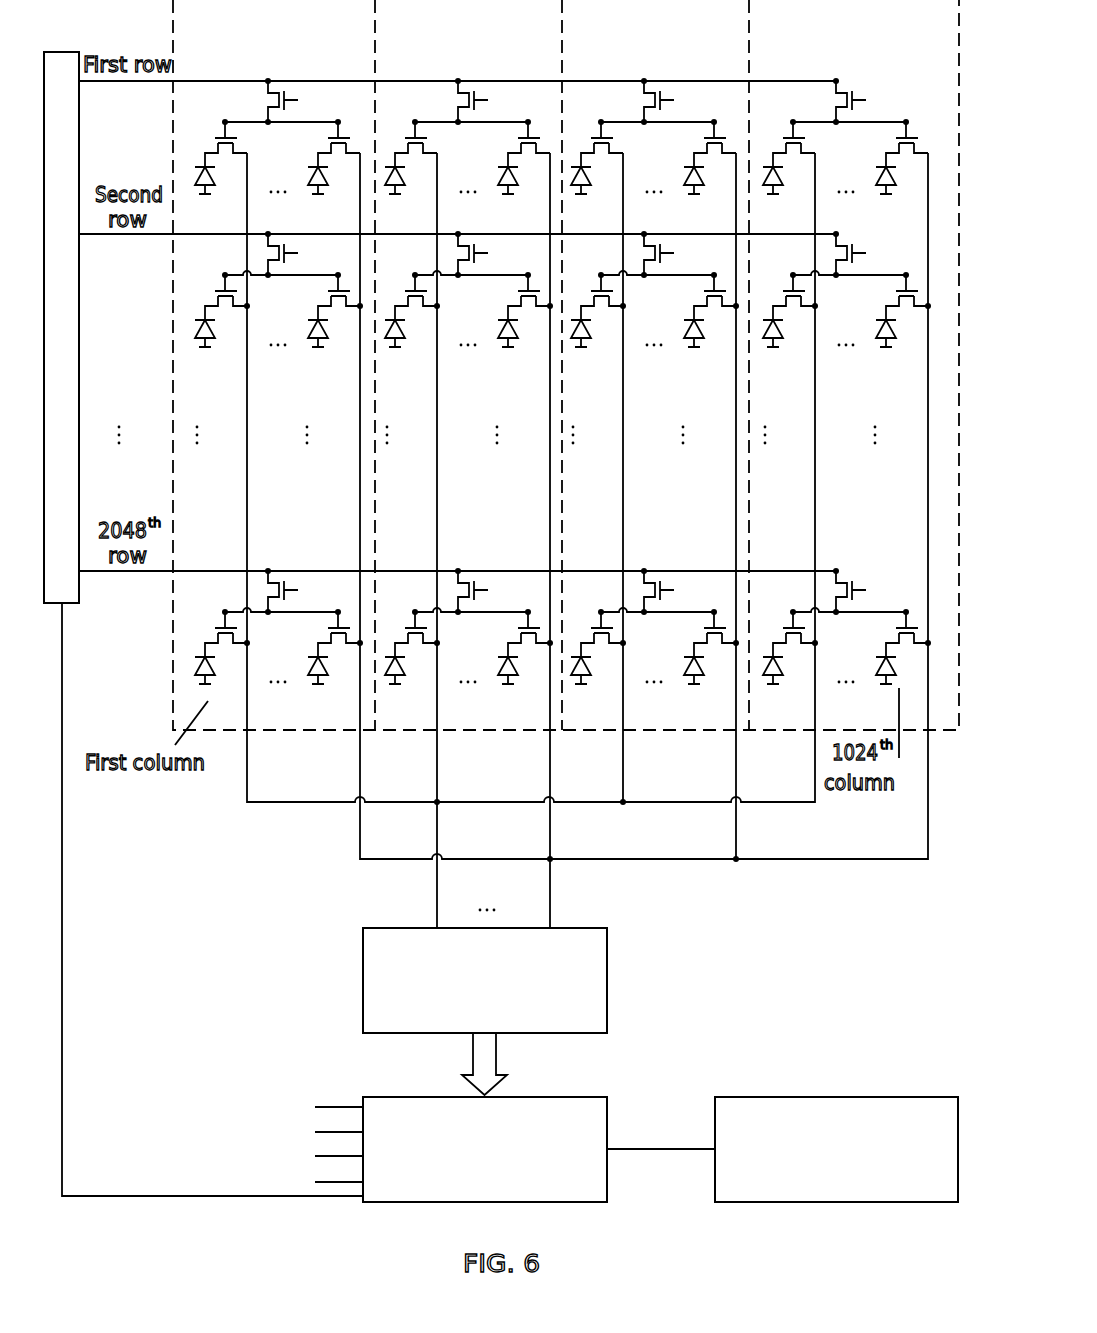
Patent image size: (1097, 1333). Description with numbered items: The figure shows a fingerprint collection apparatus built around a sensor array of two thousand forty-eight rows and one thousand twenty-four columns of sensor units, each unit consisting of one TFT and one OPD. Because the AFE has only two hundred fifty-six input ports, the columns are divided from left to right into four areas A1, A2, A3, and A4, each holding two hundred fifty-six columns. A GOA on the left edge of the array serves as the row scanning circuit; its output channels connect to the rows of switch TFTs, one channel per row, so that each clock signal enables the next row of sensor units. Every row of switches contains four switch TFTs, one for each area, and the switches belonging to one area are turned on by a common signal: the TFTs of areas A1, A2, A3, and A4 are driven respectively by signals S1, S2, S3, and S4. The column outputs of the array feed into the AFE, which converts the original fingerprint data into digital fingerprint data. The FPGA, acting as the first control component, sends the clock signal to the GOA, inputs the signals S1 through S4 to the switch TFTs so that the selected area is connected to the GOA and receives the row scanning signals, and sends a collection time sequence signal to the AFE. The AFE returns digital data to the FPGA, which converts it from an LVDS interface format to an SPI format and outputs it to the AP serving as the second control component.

The element GOA is at (62, 52).
The area A1 is at (279, 354).
The area A2 is at (469, 354).
The area A3 is at (655, 354).
The area A4 is at (847, 354).
The signal S1 is at (298, 346).
The signal S2 is at (491, 346).
The signal S3 is at (675, 346).
The signal S4 is at (867, 346).
The element AFE is at (485, 1011).
The element FPGA is at (502, 1149).
The element AP is at (836, 1149).